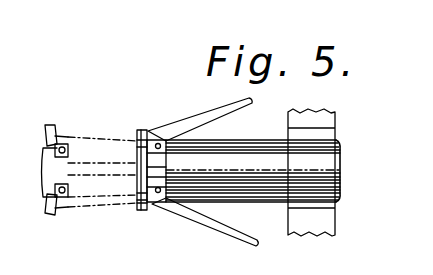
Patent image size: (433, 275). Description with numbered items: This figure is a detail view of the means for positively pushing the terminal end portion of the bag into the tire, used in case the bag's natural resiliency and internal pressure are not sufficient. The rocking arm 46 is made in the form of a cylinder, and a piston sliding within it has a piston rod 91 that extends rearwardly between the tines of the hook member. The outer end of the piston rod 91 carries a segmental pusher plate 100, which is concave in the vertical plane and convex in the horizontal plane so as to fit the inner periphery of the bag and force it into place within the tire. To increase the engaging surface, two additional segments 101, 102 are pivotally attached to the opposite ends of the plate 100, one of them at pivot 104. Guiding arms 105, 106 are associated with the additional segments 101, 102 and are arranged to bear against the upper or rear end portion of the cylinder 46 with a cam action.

The rocking arm 46 is at (253, 171).
The piston rod 91 is at (158, 172).
The segmental pusher plate 100 is at (136, 184).
The additional segment 101 is at (142, 129).
The additional segment 102 is at (140, 211).
The pivot 104 is at (159, 201).
The guiding arm 105 is at (214, 112).
The guiding arm 106 is at (232, 236).